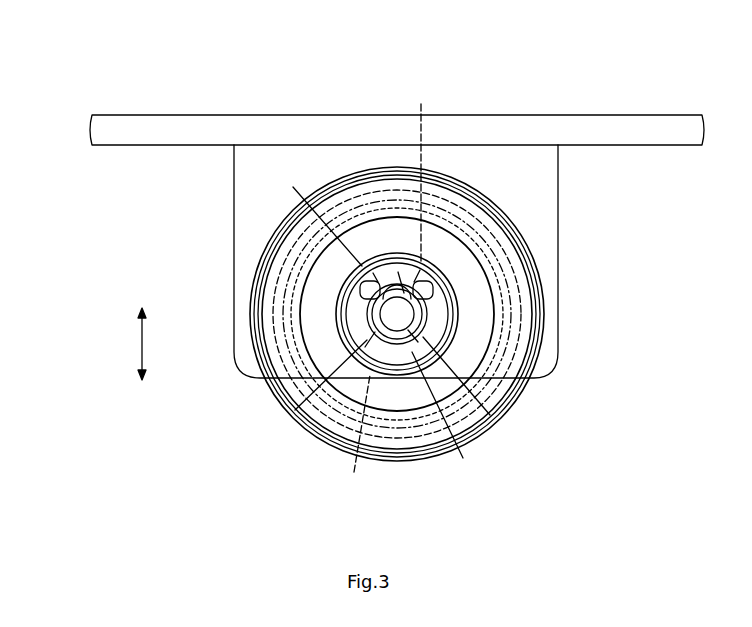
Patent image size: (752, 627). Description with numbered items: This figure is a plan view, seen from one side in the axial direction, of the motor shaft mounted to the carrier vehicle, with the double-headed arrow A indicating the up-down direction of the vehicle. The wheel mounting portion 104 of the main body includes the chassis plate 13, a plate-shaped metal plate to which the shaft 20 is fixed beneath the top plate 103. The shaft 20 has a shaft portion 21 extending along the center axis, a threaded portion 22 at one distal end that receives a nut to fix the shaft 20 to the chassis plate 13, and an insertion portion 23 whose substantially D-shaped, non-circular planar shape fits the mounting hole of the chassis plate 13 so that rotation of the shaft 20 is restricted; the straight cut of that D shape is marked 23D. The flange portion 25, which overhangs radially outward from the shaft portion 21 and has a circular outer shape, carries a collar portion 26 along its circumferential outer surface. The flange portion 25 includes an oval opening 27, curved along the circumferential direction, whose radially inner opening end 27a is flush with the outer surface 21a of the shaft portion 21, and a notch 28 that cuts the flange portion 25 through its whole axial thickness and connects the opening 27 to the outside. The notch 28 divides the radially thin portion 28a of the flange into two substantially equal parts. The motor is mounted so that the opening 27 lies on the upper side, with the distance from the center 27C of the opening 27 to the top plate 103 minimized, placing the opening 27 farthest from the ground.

The top plate 103 is at (176, 125).
The chassis plate 13 is at (351, 261).
The wheel mounting portion 104 is at (243, 193).
The double-headed arrow A is at (142, 342).
The shaft 20 is at (437, 285).
The shaft portion 21 is at (389, 292).
The outer surface of the shaft portion 21a is at (389, 292).
The threaded portion 22 is at (490, 415).
The insertion portion 23 is at (300, 425).
The tire tread 23D is at (321, 216).
The flange portion 25 is at (463, 458).
The collar portion 26 is at (458, 295).
The opening 27 is at (496, 212).
The radially inner opening end 27a is at (446, 250).
The center of the opening 27C is at (403, 320).
The notch 28 is at (400, 255).
The thin portion 28a is at (377, 265).